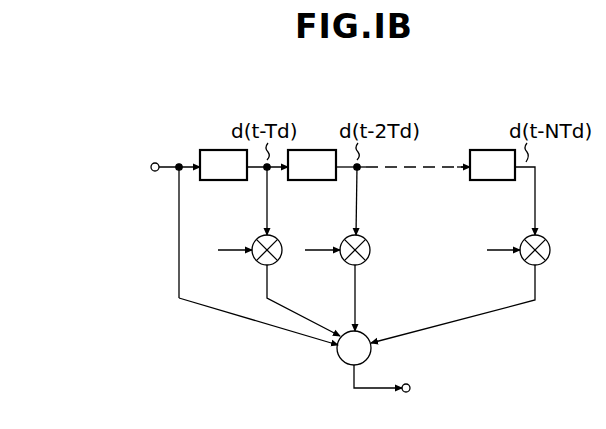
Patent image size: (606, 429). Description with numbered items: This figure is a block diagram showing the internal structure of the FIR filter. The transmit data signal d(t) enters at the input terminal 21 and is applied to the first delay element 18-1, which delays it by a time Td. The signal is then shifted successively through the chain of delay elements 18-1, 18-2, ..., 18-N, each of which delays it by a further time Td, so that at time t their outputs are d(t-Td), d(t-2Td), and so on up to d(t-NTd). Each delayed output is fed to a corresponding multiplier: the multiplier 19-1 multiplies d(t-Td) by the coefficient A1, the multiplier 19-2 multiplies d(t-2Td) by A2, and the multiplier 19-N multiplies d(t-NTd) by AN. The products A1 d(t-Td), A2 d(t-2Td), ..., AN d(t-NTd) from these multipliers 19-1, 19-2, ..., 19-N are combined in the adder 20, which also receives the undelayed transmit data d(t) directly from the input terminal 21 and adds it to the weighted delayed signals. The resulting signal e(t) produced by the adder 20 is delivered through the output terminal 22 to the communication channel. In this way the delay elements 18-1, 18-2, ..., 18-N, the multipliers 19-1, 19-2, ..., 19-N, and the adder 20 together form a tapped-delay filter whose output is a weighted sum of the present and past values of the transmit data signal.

The delay element 18-1 is at (218, 149).
The delay element 18-2 is at (312, 149).
The delay element 18-N is at (492, 149).
The multiplier 19-1 is at (255, 259).
The multiplier 19-2 is at (341, 259).
The multiplier 19-N is at (521, 259).
The adder 20 is at (338, 354).
The input terminal 21 is at (155, 172).
The output terminal 22 is at (408, 393).